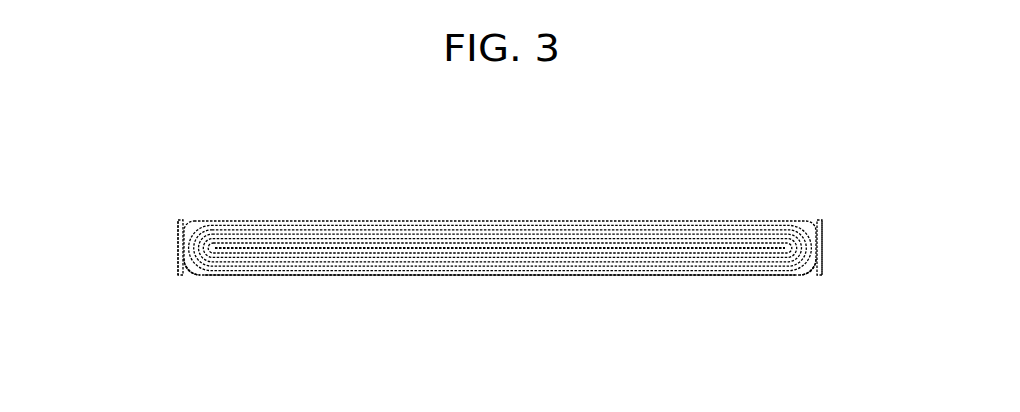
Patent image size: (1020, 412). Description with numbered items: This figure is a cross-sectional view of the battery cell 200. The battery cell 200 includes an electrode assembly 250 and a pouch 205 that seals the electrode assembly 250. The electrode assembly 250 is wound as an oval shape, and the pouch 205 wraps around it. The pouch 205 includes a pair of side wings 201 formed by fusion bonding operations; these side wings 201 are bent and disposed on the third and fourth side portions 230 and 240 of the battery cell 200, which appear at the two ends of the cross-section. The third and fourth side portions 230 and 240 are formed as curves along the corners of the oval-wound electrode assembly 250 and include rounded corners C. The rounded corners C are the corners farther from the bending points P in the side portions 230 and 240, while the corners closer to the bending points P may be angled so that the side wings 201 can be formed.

The battery cell 200 is at (500, 233).
The electrode assembly 250 is at (501, 232).
The pouch 205 is at (633, 276).
The third side portion 230 is at (162, 246).
The fourth side portion 240 is at (840, 246).
The side wings 201 is at (183, 268).
The bending points P is at (181, 220).
The rounded corners C is at (192, 276).